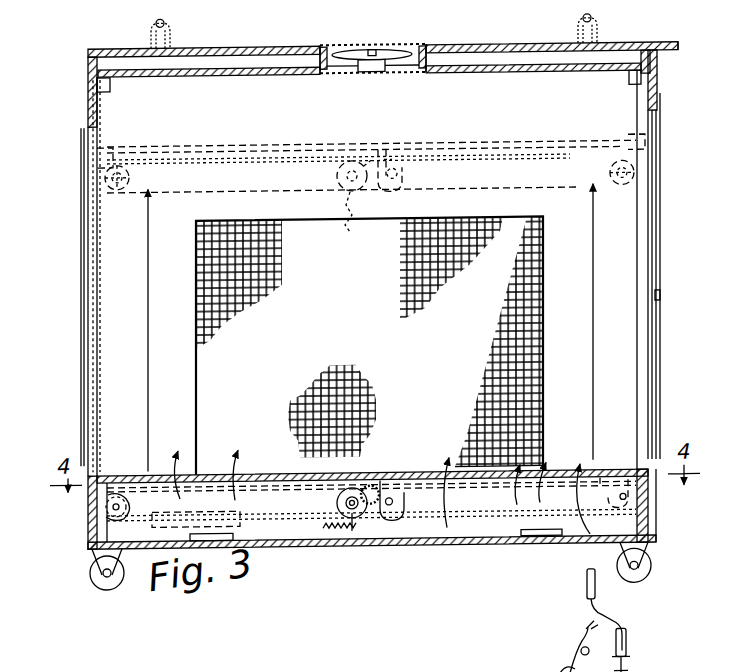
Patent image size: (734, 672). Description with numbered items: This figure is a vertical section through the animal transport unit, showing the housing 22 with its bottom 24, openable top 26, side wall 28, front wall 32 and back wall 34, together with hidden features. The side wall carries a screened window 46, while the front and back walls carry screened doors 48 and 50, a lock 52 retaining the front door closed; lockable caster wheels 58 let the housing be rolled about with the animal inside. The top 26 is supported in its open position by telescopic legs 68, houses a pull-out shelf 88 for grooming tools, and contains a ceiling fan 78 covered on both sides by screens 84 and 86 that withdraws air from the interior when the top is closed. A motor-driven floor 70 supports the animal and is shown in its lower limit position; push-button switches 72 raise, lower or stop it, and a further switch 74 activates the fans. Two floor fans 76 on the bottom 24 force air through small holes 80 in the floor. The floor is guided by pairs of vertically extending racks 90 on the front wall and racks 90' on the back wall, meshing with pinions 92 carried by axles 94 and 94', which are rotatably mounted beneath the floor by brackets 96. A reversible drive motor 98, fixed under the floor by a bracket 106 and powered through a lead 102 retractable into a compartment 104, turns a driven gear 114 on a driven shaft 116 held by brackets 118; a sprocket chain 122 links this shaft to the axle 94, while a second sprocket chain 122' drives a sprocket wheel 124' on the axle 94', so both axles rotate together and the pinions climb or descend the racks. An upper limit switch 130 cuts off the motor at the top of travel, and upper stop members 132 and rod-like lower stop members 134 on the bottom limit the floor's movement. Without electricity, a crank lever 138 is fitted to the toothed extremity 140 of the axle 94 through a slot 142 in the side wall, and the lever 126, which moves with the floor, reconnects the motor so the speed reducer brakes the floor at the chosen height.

The housing 22 is at (96, 47).
The bottom 24 is at (408, 552).
The openable top 26 is at (262, 49).
The side wall 28 is at (325, 653).
The front wall 32 is at (658, 527).
The back wall 34 is at (90, 508).
The screened window 46 is at (530, 360).
The front door 48 is at (662, 264).
The back door 50 is at (82, 272).
The lock 52 is at (661, 301).
The caster wheel 58 is at (95, 586).
The telescopic leg 68 is at (172, 38).
The motor-driven floor 70 is at (244, 147).
The push-button switch 72 is at (655, 130).
The push-button switch 74 is at (660, 162).
The floor fan 76 is at (262, 545).
The ceiling fan 78 is at (350, 57).
The small holes 80 is at (540, 452).
The screen 84 is at (392, 48).
The screen 86 is at (409, 78).
The pull-out shelf 88 is at (674, 48).
The rack 90 is at (624, 286).
The rack 90' is at (144, 275).
The pinion 92 is at (626, 192).
The axle 94 is at (598, 333).
The axle 94' is at (140, 404).
The bracket 96 is at (630, 147).
The reversible drive motor 98 is at (338, 189).
The lead 102 is at (570, 664).
The compartment 104 is at (292, 492).
The bracket 106 is at (368, 488).
The driven gear 114 is at (396, 193).
The driven shaft 116 is at (405, 177).
The bracket 118 is at (396, 160).
The sprocket chain 122 is at (371, 381).
The sprocket chain 122' is at (165, 424).
The sprocket wheel 124' is at (312, 325).
The lever 126 is at (290, 188).
The upper limit switch 130 is at (652, 86).
The upper stop member 132 is at (112, 86).
The lower stop member 134 is at (100, 532).
The crank lever 138 is at (630, 623).
The toothed extremity 140 is at (655, 671).
The slot 142 is at (550, 663).